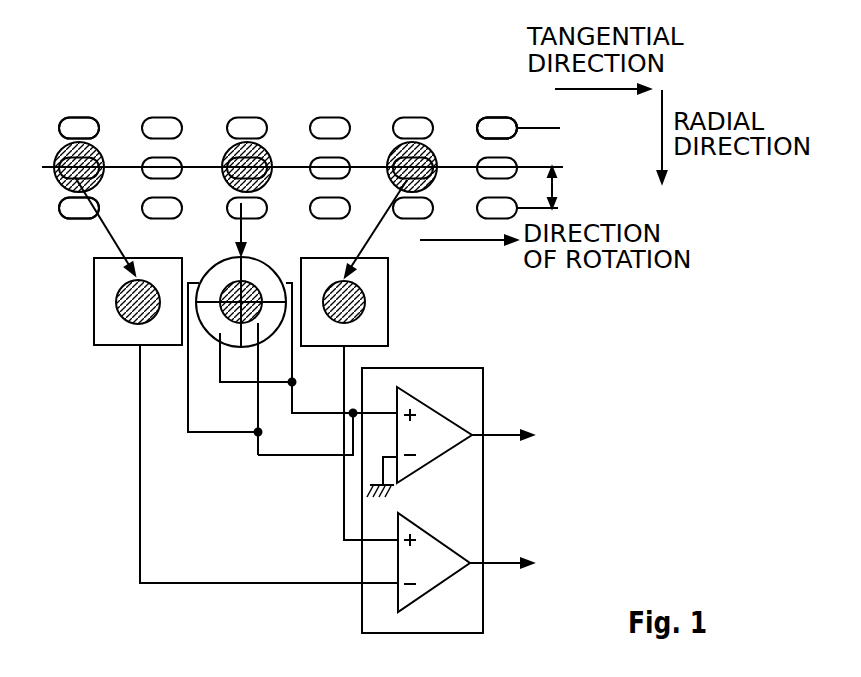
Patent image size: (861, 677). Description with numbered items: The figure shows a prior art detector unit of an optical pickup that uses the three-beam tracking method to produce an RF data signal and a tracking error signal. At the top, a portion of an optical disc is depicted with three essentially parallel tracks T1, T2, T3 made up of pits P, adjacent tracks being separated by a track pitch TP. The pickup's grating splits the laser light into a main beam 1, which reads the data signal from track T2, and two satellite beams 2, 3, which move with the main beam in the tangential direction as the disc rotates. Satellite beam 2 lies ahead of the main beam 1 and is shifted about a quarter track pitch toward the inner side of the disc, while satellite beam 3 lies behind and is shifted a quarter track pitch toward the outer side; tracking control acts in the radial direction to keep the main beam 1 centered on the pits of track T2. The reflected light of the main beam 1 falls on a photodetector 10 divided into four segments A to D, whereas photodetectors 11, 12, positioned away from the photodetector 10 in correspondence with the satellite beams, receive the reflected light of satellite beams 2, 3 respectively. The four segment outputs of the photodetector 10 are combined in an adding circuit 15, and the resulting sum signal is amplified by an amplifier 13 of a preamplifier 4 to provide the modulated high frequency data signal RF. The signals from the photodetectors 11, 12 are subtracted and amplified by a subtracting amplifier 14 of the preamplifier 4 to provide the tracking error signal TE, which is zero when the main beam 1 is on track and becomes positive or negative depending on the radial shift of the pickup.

The main beam 1 is at (267, 156).
The satellite beam 2 is at (62, 150).
The satellite beam 3 is at (395, 156).
The preamplifier 4 is at (463, 367).
The photodetector 10 is at (262, 262).
The photodetector 11 is at (101, 307).
The photodetector 12 is at (380, 310).
The amplifier 13 is at (433, 409).
The subtracting amplifier 14 is at (433, 533).
The adding circuit 15 is at (279, 445).
The track T1 is at (82, 126).
The track T2 is at (542, 167).
The track T3 is at (72, 207).
The pits P is at (485, 126).
The track pitch TP is at (555, 183).